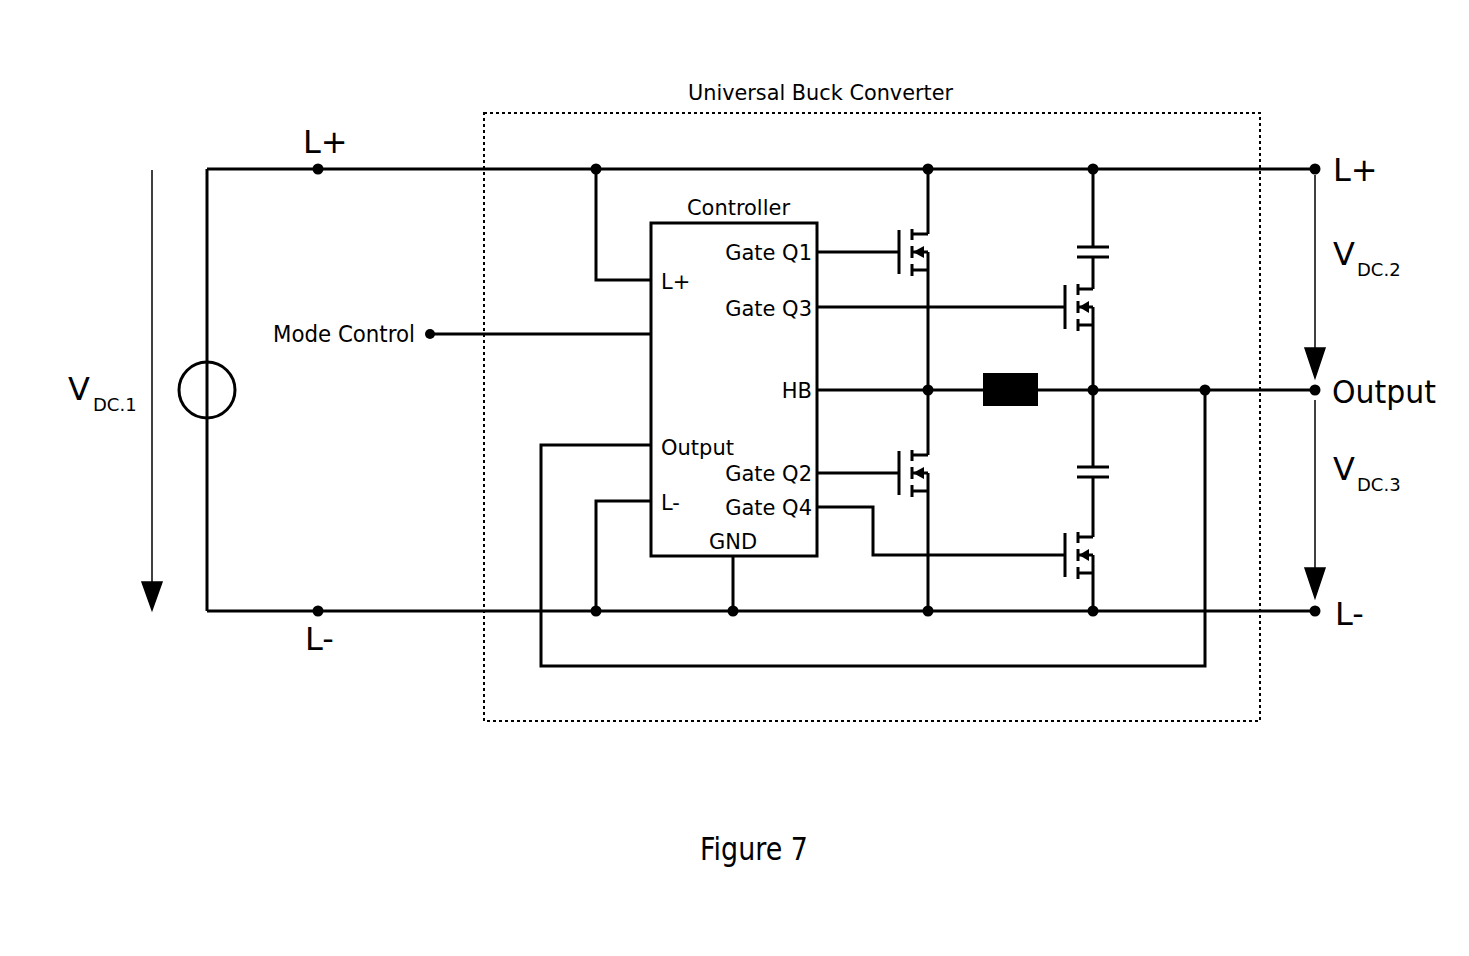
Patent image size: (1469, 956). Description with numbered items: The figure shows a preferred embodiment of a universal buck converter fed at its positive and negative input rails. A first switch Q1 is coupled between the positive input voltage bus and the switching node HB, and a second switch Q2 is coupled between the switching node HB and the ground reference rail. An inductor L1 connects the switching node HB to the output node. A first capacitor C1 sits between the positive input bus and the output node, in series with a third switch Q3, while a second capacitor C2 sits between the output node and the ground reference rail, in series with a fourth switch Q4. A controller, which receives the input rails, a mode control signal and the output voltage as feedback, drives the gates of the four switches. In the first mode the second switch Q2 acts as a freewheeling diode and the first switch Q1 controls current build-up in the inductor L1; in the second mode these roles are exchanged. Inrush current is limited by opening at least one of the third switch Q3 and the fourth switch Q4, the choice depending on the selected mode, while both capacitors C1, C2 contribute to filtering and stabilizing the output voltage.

The first switch Q1 is at (943, 239).
The second switch Q2 is at (943, 460).
The third switch Q3 is at (1110, 307).
The fourth switch Q4 is at (1110, 555).
The first capacitor C1 is at (1114, 229).
The second capacitor C2 is at (1114, 450).
The inductor L1 is at (1010, 367).